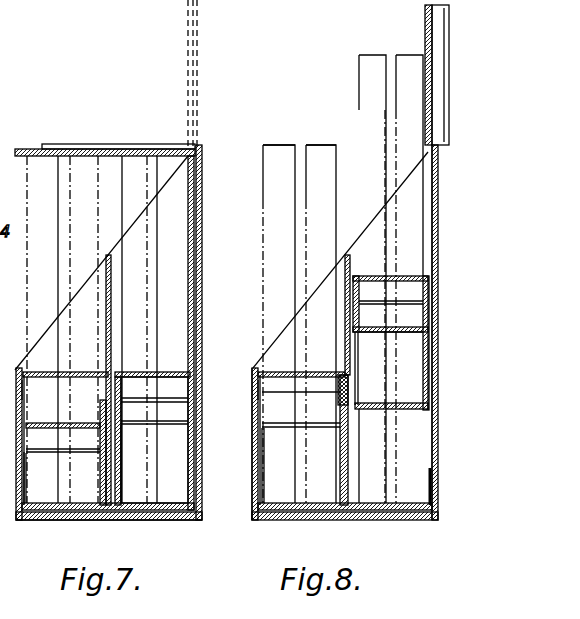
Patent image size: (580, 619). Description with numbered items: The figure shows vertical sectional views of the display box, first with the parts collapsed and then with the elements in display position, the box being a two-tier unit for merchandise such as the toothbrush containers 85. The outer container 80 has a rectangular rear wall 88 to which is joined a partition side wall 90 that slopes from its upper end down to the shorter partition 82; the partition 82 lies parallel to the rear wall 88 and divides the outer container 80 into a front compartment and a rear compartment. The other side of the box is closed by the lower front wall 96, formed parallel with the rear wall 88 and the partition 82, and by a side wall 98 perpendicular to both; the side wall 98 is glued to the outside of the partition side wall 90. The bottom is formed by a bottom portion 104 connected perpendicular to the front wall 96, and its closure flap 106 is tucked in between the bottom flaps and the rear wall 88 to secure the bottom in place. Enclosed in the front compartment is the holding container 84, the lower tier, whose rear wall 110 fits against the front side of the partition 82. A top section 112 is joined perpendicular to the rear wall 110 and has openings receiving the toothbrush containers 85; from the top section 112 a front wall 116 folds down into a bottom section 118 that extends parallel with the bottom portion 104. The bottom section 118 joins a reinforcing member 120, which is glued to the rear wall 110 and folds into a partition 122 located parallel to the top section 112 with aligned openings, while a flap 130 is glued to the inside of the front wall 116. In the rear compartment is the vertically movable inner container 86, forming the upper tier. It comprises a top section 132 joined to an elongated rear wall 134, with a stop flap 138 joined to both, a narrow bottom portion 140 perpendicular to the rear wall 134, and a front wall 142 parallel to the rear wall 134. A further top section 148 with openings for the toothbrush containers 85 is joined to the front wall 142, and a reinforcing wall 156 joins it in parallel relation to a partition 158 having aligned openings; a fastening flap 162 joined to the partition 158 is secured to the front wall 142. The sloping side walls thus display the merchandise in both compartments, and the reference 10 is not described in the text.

In FIG. 7, the gas flow direction arrow 10 is at (247, 392).
In FIG. 8, the gas flow direction arrow 10 is at (461, 392).
In FIG. 7, the outer container 80 is at (204, 229).
In FIG. 8, the outer container 80 is at (440, 199).
In FIG. 7, the partition 82 is at (106, 290).
In FIG. 8, the partition 82 is at (345, 265).
In FIG. 8, the holding container 84 is at (256, 519).
In FIG. 8, the toothbrush containers 85 is at (347, 112).
In FIG. 7, the inner container 86 is at (134, 486).
In FIG. 8, the inner container 86 is at (414, 363).
In FIG. 8, the rear wall 88 is at (438, 212).
In FIG. 7, the partition side wall 90 is at (136, 225).
In FIG. 8, the partition side wall 90 is at (379, 220).
In FIG. 7, the front wall 96 is at (32, 470).
In FIG. 8, the front wall 96 is at (256, 452).
In FIG. 7, the side wall 98 is at (48, 334).
In FIG. 8, the side wall 98 is at (285, 332).
In FIG. 7, the bottom portion 104 is at (90, 516).
In FIG. 8, the bottom portion 104 is at (356, 516).
In FIG. 7, the closure flap 106 is at (202, 507).
In FIG. 8, the closure flap 106 is at (432, 483).
In FIG. 7, the rear wall 110 is at (103, 452).
In FIG. 8, the rear wall 110 is at (348, 452).
In FIG. 7, the top section 112 is at (82, 370).
In FIG. 8, the top section 112 is at (316, 370).
In FIG. 7, the front wall 116 is at (40, 475).
In FIG. 8, the front wall 116 is at (280, 488).
In FIG. 7, the bottom section 118 is at (54, 510).
In FIG. 8, the bottom section 118 is at (287, 512).
In FIG. 7, the reinforcing member 120 is at (97, 478).
In FIG. 8, the reinforcing member 120 is at (334, 465).
In FIG. 7, the partition 122 is at (86, 425).
In FIG. 8, the partition 122 is at (306, 425).
In FIG. 7, the flap 130 is at (24, 404).
In FIG. 8, the flap 130 is at (258, 414).
In FIG. 7, the top section 132 is at (95, 156).
In FIG. 8, the top section 132 is at (427, 40).
In FIG. 7, the rear wall 134 is at (193, 305).
In FIG. 8, the rear wall 134 is at (418, 250).
In FIG. 7, the stop flap 138 is at (146, 149).
In FIG. 8, the stop flap 138 is at (440, 85).
In FIG. 7, the bottom portion 140 is at (167, 512).
In FIG. 8, the bottom portion 140 is at (413, 412).
In FIG. 7, the front wall 142 is at (133, 487).
In FIG. 8, the front wall 142 is at (356, 372).
In FIG. 7, the top section 148 is at (172, 372).
In FIG. 8, the top section 148 is at (415, 278).
In FIG. 7, the reinforcing wall 156 is at (178, 386).
In FIG. 8, the reinforcing wall 156 is at (415, 301).
In FIG. 8, the partition 158 is at (415, 328).
In FIG. 7, the fastening flap 162 is at (121, 438).
In FIG. 8, the fastening flap 162 is at (357, 348).